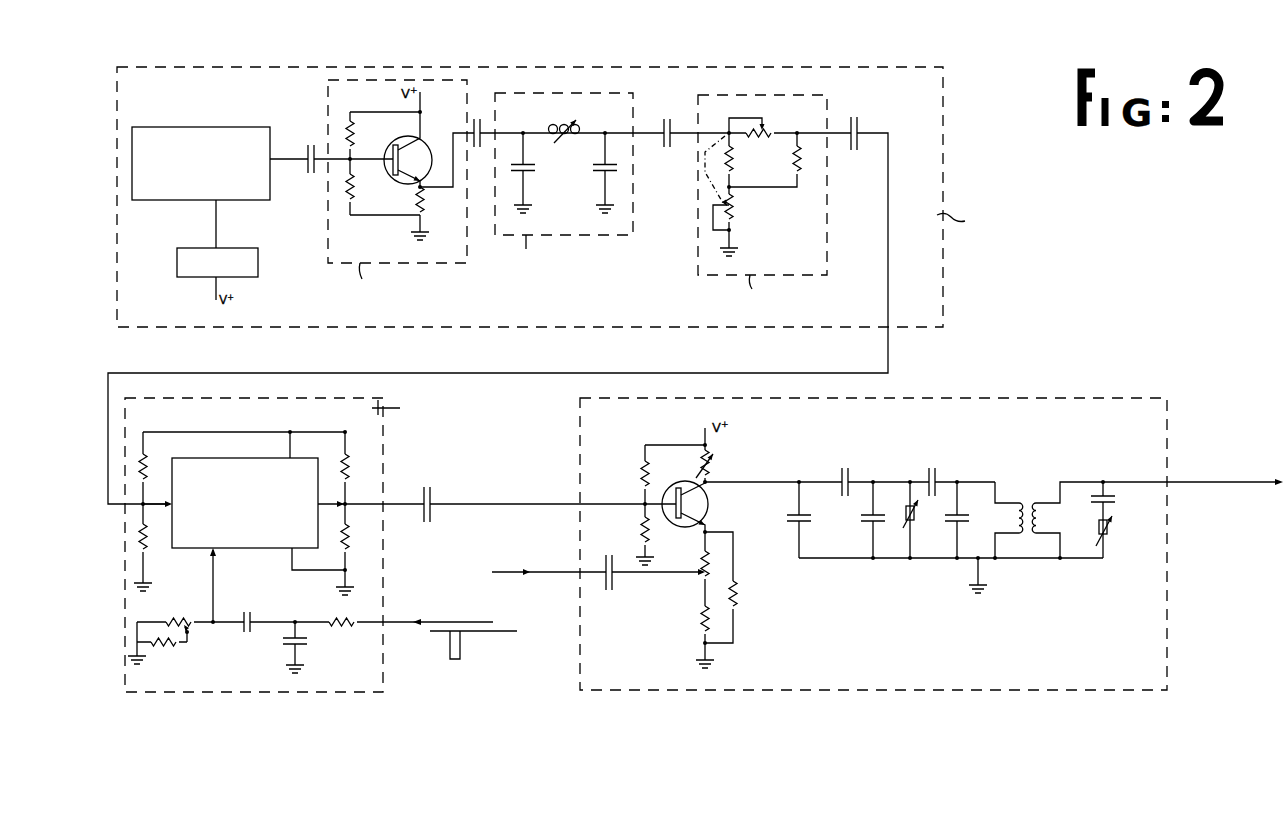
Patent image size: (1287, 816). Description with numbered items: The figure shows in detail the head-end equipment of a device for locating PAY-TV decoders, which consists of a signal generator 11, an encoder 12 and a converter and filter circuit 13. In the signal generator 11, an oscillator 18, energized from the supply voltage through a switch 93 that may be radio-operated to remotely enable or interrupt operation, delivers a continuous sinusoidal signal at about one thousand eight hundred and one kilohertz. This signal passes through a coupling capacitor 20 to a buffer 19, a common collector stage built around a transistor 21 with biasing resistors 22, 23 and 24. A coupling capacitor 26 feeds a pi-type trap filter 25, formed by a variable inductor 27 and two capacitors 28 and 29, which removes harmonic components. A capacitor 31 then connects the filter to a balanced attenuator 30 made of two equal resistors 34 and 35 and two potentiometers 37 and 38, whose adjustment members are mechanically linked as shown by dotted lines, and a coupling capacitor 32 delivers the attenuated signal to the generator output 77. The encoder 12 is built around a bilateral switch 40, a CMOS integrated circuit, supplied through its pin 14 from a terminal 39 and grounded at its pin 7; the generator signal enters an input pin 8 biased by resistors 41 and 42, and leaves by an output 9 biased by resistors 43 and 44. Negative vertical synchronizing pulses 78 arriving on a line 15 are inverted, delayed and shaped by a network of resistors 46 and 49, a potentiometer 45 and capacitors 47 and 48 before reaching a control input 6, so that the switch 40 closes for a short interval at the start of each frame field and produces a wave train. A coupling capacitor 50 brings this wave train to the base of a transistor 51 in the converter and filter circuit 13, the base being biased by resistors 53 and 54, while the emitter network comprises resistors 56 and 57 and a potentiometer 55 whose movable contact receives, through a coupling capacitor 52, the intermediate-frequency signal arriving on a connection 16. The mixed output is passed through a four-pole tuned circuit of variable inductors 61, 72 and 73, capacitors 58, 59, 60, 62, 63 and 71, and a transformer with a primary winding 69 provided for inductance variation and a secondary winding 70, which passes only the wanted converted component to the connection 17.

The control input 6 is at (219, 585).
The pin 7 is at (311, 559).
The input pin 8 is at (154, 517).
The output pin 9 is at (371, 496).
The signal generator 11 is at (937, 279).
The encoder 12 is at (378, 435).
The converter and filter circuit 13 is at (1160, 639).
The pin 14 is at (299, 445).
The line 15 is at (443, 619).
The connection 16 is at (511, 569).
The connection 17 is at (1242, 481).
The oscillator 18 is at (160, 200).
The buffer 19 is at (326, 247).
The coupling capacitor 20 is at (308, 144).
The transistor 21 is at (425, 150).
The biasing resistor 22 is at (423, 203).
The biasing resistor 23 is at (355, 189).
The biasing resistor 24 is at (355, 135).
The trap filter 25 is at (617, 236).
The coupling capacitor 26 is at (475, 118).
The variable inductor 27 is at (564, 128).
The capacitor 28 is at (528, 172).
The capacitor 29 is at (599, 171).
The balanced attenuator 30 is at (698, 262).
The capacitor 31 is at (666, 148).
The coupling capacitor 32 is at (854, 117).
The resistor 34 is at (733, 167).
The resistor 35 is at (794, 171).
The potentiometer 37 is at (774, 124).
The potentiometer 38 is at (737, 206).
The terminal 39 is at (345, 432).
The bilateral switch 40 is at (250, 548).
The resistor 41 is at (147, 465).
The resistor 42 is at (149, 550).
The resistor 43 is at (348, 477).
The resistor 44 is at (349, 559).
The potentiometer 45 is at (185, 619).
The resistor 46 is at (165, 648).
The capacitor 47 is at (248, 634).
The capacitor 48 is at (305, 647).
The resistor 49 is at (335, 618).
The coupling capacitor 50 is at (428, 487).
The transistor 51 is at (708, 502).
The coupling capacitor 52 is at (608, 590).
The resistor 53 is at (639, 535).
The resistor 54 is at (639, 480).
The potentiometer 55 is at (697, 579).
The resistor 56 is at (695, 625).
The resistor 57 is at (738, 597).
The capacitor 58 is at (792, 521).
The capacitor 59 is at (846, 468).
The capacitor 60 is at (868, 521).
The variable inductor 61 is at (905, 529).
The capacitor 62 is at (935, 468).
The capacitor 63 is at (955, 526).
The primary winding 69 is at (1024, 501).
The secondary winding 70 is at (1060, 520).
The capacitor 71 is at (1116, 497).
The variable inductor 72 is at (1114, 536).
The variable inductor 73 is at (715, 453).
The output 77 is at (888, 373).
The negative pulses 78 is at (469, 633).
The switch 93 is at (187, 281).